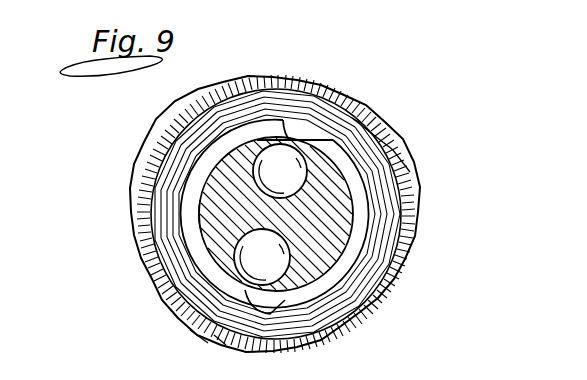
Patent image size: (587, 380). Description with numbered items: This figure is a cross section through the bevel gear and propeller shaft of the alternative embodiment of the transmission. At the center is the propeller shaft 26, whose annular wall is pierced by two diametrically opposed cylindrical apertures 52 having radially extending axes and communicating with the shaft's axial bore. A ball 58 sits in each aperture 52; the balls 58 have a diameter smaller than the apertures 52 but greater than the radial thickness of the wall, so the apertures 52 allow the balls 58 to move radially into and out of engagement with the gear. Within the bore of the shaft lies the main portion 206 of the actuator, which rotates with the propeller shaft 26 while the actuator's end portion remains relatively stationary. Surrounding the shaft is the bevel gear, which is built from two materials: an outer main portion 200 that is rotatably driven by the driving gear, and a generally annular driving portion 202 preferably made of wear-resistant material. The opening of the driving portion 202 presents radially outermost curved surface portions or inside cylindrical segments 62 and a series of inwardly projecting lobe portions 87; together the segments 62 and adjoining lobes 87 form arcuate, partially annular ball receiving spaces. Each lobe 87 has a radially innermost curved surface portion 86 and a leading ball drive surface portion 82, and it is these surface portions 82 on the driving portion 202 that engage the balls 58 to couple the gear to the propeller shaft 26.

The main portion 200 is at (325, 83).
The driving portion 202 is at (372, 138).
The radially outermost curved surface portions 62 is at (392, 175).
The main portion of the actuator 206 is at (215, 190).
The propeller shaft 26 is at (210, 221).
The balls 58 is at (268, 214).
The cylindrical apertures 52 is at (262, 314).
The leading ball drive surface portions 82 is at (202, 339).
The radially innermost curved surface portions 86 is at (218, 340).
The lobe portions 87 is at (293, 137).